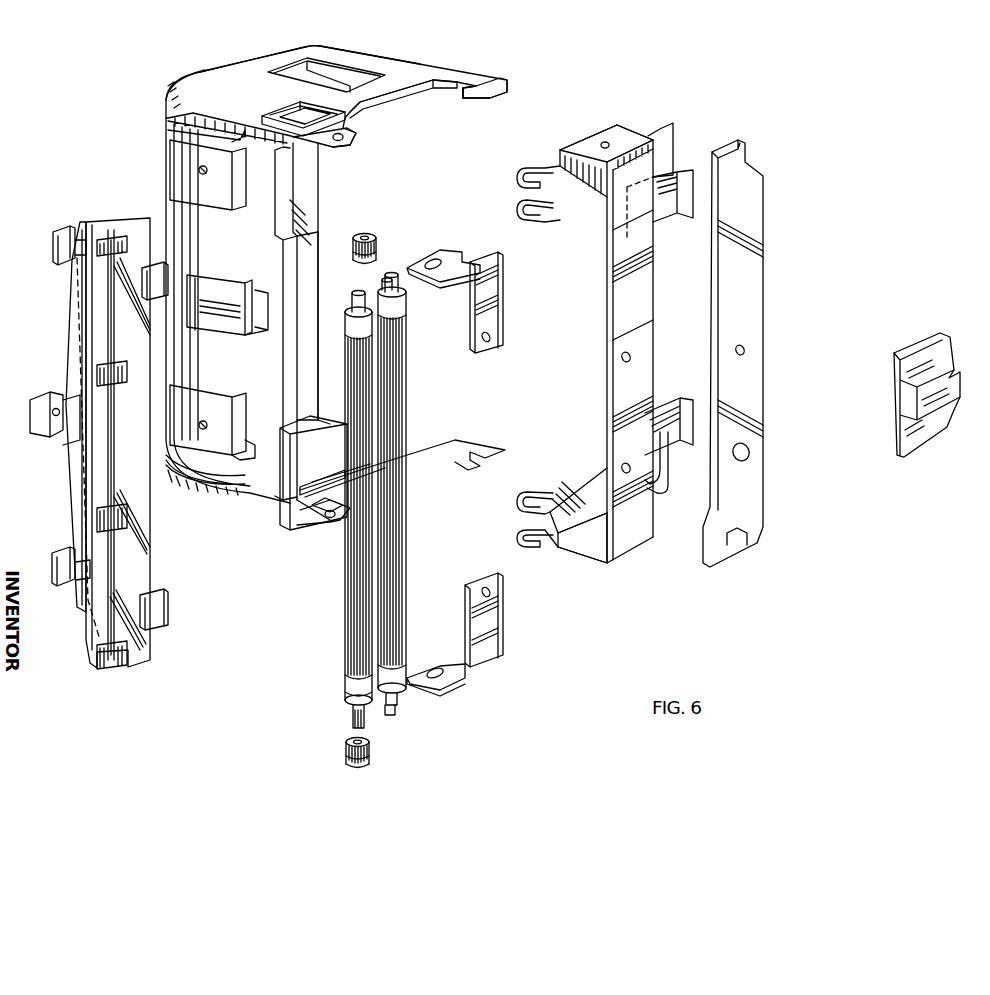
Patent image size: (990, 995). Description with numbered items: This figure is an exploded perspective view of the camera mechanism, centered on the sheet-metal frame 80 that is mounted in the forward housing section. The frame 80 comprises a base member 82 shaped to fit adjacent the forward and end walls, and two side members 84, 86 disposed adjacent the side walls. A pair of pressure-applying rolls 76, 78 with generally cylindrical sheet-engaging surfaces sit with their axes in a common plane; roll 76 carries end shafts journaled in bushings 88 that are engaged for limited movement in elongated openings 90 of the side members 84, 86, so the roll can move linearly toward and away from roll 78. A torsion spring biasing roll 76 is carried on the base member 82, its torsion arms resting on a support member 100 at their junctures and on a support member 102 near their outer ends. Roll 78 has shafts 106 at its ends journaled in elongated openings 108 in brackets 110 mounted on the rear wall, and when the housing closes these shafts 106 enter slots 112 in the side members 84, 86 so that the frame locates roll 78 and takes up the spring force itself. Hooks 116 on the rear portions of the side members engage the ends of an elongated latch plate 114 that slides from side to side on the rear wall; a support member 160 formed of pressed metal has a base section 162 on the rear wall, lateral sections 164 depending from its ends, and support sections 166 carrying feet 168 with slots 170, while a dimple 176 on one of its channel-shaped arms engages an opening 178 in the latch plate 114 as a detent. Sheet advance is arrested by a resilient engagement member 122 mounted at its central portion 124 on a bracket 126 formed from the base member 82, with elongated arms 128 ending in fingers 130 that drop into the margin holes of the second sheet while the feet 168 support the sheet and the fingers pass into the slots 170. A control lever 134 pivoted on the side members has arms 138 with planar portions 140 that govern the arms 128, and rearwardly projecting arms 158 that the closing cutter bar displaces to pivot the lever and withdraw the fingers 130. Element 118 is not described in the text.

The roll 76 is at (357, 647).
The roll 78 is at (401, 575).
The frame 80 is at (170, 74).
The base member 82 is at (308, 195).
The side member 84 is at (248, 83).
The side member 86 is at (320, 469).
The bushing 88 is at (376, 240).
The elongated opening 90 is at (343, 142).
The support member 100 is at (212, 312).
The support member 102 is at (222, 130).
The shaft 106 is at (389, 278).
The elongated opening 108 is at (430, 265).
The bracket 110 is at (510, 300).
The slot 112 is at (367, 100).
The latch plate 114 is at (760, 205).
The hook 116 is at (476, 86).
The clip 118 is at (902, 408).
The engagement member 122 is at (61, 444).
The central portion 124 is at (50, 393).
The bracket 126 is at (254, 285).
The arm 128 is at (80, 323).
The finger 130 is at (98, 640).
The control lever 134 is at (168, 554).
The arm 138 is at (71, 223).
The planar portion 140 is at (72, 250).
The arm 158 is at (160, 266).
The support member 160 is at (597, 385).
The base section 162 is at (607, 337).
The lateral section 164 is at (614, 137).
The support section 166 is at (572, 195).
The foot 168 is at (536, 156).
The slot 170 is at (527, 200).
The dimple 176 is at (665, 455).
The opening 178 is at (758, 452).